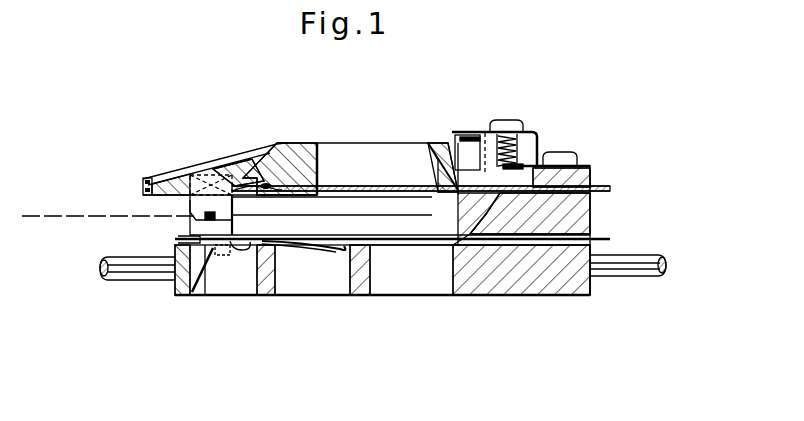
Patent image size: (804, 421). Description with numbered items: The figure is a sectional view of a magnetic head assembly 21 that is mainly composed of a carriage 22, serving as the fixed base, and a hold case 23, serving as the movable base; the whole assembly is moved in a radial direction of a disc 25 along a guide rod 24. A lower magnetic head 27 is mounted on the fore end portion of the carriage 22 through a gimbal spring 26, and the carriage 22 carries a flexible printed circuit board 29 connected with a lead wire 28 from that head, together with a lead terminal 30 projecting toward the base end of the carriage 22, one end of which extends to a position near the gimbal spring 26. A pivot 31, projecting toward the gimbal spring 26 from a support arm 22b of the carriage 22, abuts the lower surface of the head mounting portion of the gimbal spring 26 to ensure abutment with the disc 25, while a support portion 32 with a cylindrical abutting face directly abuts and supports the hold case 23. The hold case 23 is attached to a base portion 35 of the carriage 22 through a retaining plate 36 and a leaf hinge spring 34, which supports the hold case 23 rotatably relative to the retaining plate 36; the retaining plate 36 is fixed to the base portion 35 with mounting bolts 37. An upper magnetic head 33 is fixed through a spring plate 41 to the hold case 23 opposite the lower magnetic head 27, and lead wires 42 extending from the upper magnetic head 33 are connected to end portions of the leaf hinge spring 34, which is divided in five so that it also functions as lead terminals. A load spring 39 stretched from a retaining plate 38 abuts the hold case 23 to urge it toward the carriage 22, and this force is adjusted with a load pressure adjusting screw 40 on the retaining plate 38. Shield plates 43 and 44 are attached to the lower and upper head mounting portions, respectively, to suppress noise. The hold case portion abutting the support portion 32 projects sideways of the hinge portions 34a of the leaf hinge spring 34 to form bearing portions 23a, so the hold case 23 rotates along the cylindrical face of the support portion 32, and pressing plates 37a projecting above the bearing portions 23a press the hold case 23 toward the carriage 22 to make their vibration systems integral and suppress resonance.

The magnetic head assembly 21 is at (160, 287).
The carriage 22 is at (570, 300).
The support arm 22b is at (207, 297).
The hold case 23 is at (308, 141).
The bearing portions 23a is at (480, 228).
The guide rod 24 is at (642, 278).
The disc 25 is at (48, 217).
The gimbal spring 26 is at (177, 234).
The lower magnetic head 27 is at (192, 222).
The lead wire 28 is at (248, 249).
The flexible printed circuit board 29 is at (318, 245).
The lead terminal 30 is at (422, 246).
The pivot 31 is at (218, 247).
The support portion 32 is at (591, 224).
The upper magnetic head 33 is at (195, 206).
The leaf hinge spring 34 is at (373, 183).
The hinge portions 34a is at (512, 166).
The base portion 35 is at (592, 206).
The retaining plate 36 is at (588, 178).
The mounting bolts 37 is at (578, 153).
The pressing plates 37a is at (542, 156).
The retaining plate 38 is at (460, 131).
The load spring 39 is at (485, 132).
The load pressure adjusting screw 40 is at (507, 125).
The spring plate 41 is at (180, 192).
The lead wires 42 is at (257, 170).
The shield plate 43 is at (200, 298).
The shield plate 44 is at (173, 173).